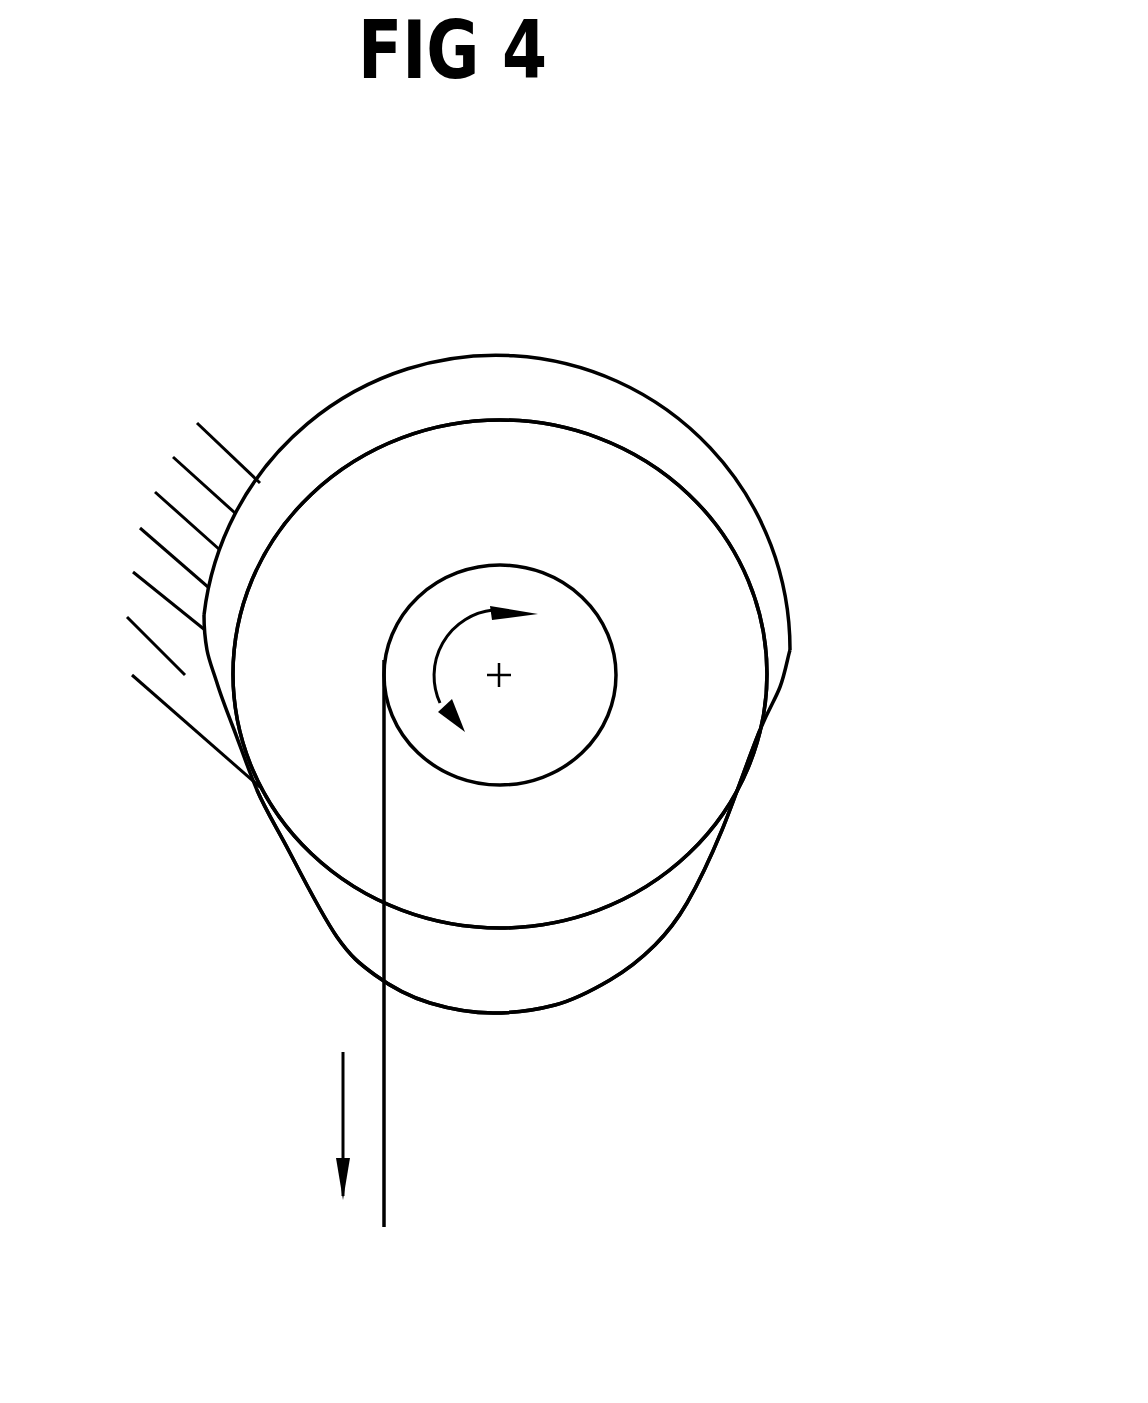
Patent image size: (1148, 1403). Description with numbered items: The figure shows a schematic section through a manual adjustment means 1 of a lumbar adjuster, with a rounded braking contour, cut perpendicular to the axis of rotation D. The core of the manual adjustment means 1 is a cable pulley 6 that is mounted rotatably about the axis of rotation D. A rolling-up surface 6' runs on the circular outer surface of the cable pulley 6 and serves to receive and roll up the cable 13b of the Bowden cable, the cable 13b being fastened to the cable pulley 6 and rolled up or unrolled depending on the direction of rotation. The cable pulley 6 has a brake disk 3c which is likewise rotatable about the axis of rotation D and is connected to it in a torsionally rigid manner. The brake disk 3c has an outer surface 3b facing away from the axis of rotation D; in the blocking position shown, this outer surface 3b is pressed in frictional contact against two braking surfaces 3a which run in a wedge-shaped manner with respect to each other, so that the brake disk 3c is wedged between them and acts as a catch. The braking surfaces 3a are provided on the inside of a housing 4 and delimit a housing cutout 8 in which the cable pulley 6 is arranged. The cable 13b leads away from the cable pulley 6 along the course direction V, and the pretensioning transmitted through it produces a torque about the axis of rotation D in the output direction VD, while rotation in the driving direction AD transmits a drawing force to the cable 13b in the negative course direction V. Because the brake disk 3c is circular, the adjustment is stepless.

The manual adjustment means 1 is at (886, 398).
The housing cutout 8 is at (660, 443).
The outer surface 3b is at (767, 623).
The brake disk 3c is at (625, 832).
The braking surfaces 3a is at (720, 835).
The cable pulley 6 is at (645, 675).
The rolling-up surface 6' is at (505, 598).
The driving direction AD is at (518, 589).
The output direction VD is at (465, 749).
The axis of rotation D is at (510, 689).
The housing 4 is at (183, 675).
The cable 13b is at (384, 1137).
The course direction V is at (309, 1126).